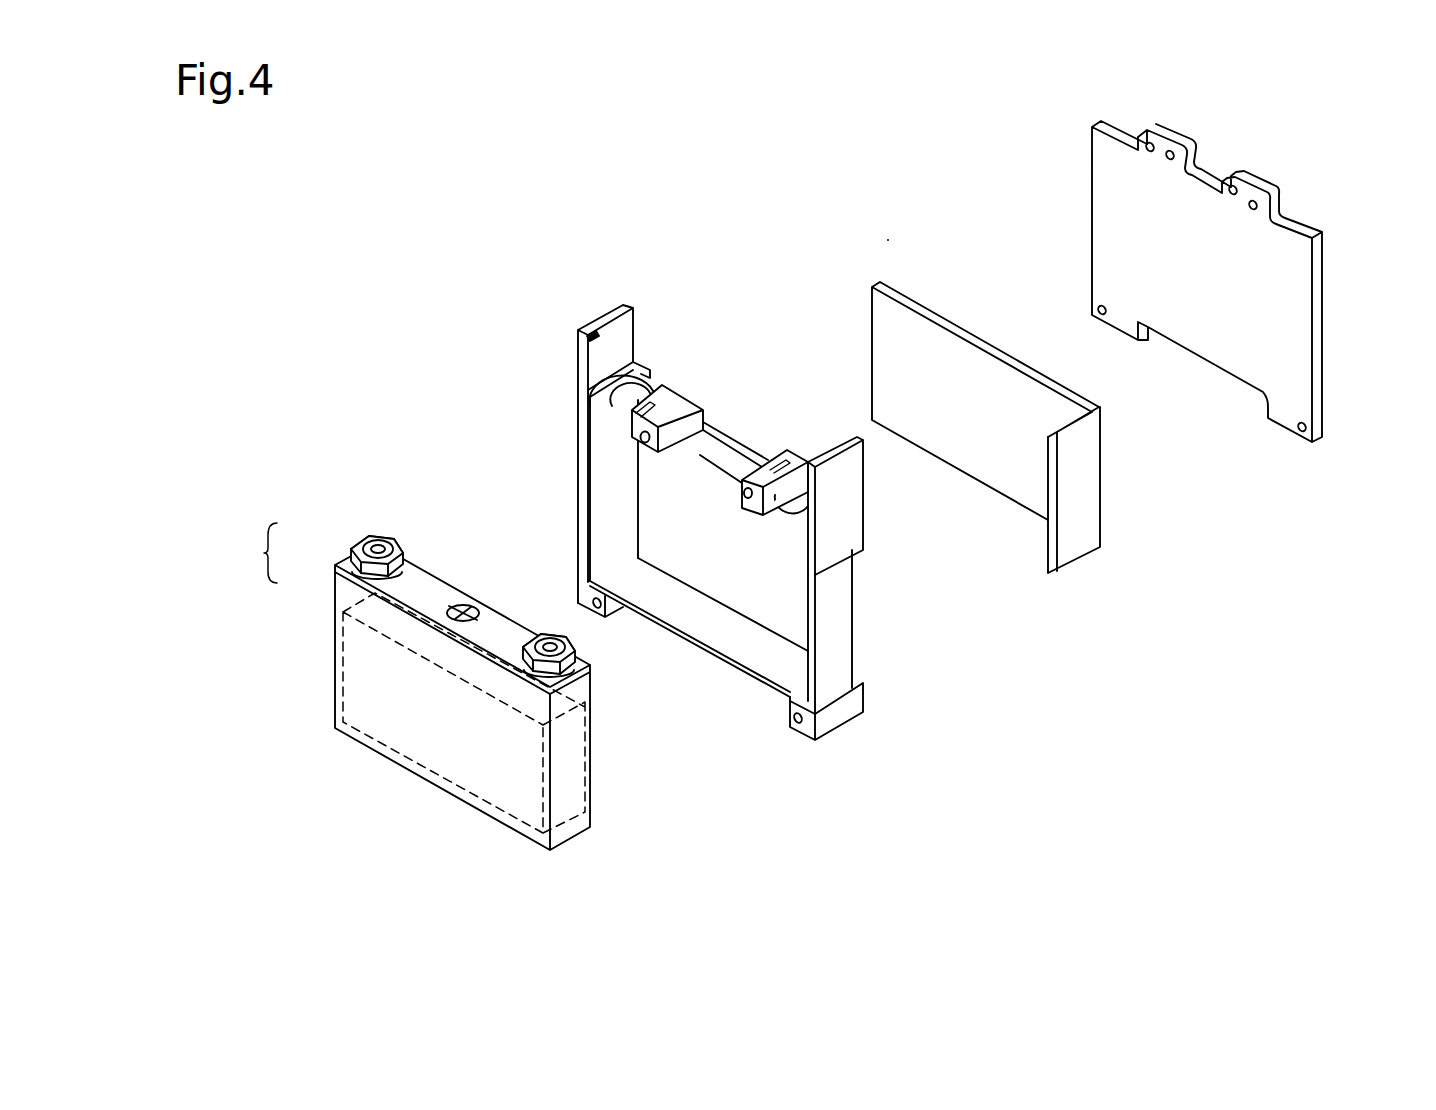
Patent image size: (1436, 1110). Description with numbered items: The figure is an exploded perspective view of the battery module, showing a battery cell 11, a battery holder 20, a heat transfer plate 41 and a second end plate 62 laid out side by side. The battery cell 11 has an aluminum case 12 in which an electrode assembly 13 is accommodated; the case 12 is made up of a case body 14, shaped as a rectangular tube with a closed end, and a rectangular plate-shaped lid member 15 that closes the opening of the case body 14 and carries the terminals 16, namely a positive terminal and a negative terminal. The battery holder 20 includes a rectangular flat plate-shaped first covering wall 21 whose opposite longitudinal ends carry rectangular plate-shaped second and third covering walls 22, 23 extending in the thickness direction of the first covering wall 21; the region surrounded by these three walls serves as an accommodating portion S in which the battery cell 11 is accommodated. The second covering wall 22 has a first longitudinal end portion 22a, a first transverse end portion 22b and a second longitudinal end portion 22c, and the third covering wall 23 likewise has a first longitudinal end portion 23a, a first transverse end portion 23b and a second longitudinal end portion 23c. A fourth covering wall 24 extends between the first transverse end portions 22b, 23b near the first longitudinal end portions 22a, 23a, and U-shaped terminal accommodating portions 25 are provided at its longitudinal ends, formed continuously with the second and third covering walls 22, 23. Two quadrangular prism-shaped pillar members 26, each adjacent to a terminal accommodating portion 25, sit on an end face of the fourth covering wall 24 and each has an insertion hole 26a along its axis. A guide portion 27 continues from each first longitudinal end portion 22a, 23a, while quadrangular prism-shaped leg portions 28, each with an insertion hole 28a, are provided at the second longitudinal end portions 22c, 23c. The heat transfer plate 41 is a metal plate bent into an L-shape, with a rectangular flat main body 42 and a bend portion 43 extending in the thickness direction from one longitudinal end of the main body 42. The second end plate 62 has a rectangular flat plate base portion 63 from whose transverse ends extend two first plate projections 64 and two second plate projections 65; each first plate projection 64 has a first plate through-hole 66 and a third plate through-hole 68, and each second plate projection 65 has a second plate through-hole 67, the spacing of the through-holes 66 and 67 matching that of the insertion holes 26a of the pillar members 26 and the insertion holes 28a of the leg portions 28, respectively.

The battery cell 11 is at (578, 842).
The case 12 is at (255, 553).
The electrode assembly 13 is at (340, 634).
The case body 14 is at (337, 584).
The lid member 15 is at (350, 558).
The terminals 16 is at (380, 536).
The battery holder 20 is at (724, 539).
The first covering wall 21 is at (716, 638).
The second covering wall 22 is at (808, 588).
The first longitudinal end portion 22a is at (860, 543).
The first transverse end portion 22b is at (864, 515).
The second longitudinal end portion 22c is at (850, 670).
The third covering wall 23 is at (578, 455).
The first longitudinal end portion 23a is at (580, 422).
The first transverse end portion 23b is at (640, 518).
The second longitudinal end portion 23c is at (590, 572).
The fourth covering wall 24 is at (735, 444).
The terminal accommodating portions 25 is at (648, 396).
The pillar members 26 is at (688, 406).
The insertion hole 26a is at (648, 446).
The guide portion 27 is at (630, 322).
The leg portions 28 is at (584, 592).
The insertion hole 28a is at (600, 609).
The heat transfer plate 41 is at (1019, 427).
The main body 42 is at (993, 369).
The bend portion 43 is at (1070, 454).
The second end plate 62 is at (1245, 265).
The plate base portion 63 is at (1192, 337).
The first plate projections 64 is at (1163, 131).
The second plate projections 65 is at (1118, 333).
The first plate through-hole 66 is at (1147, 153).
The second plate through-hole 67 is at (1107, 307).
The third plate through-hole 68 is at (1169, 161).
The accommodating portion S is at (715, 579).